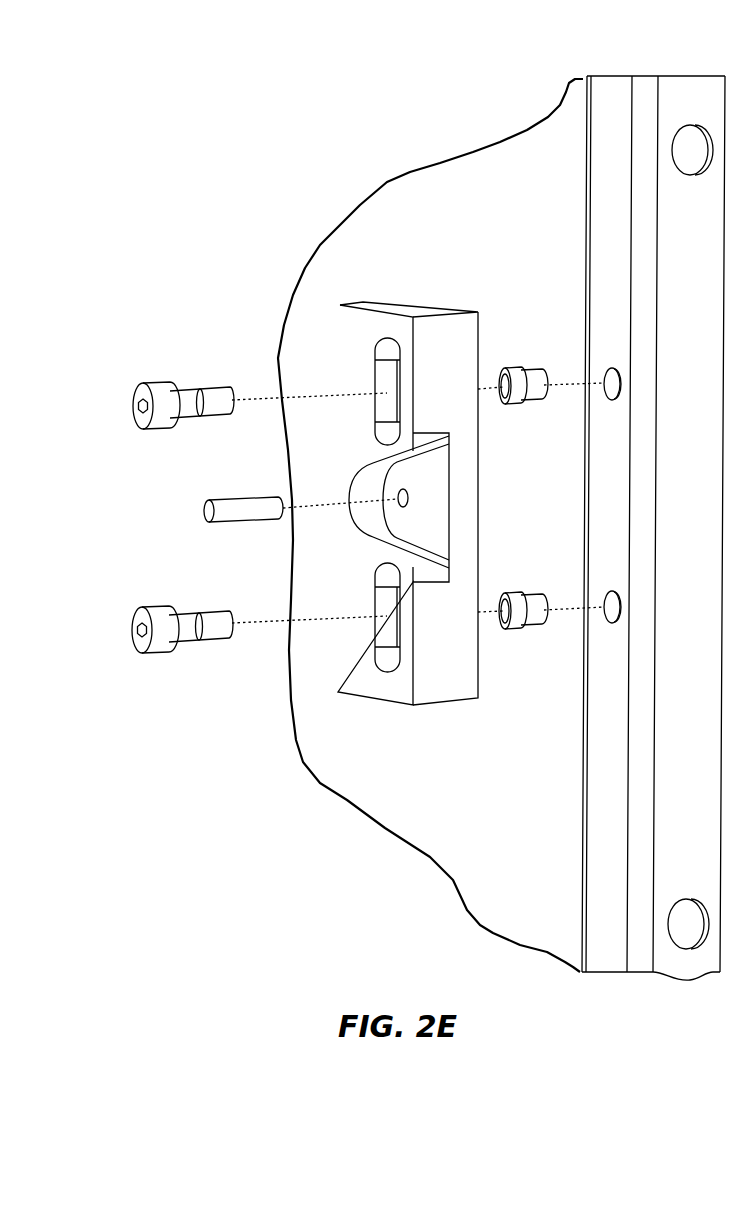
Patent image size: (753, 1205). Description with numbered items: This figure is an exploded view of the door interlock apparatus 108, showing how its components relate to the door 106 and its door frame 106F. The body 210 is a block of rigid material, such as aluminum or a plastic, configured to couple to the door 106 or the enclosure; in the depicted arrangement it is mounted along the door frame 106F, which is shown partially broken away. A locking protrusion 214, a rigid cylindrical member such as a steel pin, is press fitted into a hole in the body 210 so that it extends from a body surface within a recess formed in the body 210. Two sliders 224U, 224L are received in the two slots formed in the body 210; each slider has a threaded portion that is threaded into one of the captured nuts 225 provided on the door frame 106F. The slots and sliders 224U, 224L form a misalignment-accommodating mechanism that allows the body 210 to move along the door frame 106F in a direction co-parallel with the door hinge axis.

The door interlock apparatus 108 is at (178, 221).
The door 106 is at (591, 512).
The door frame 106F is at (613, 115).
The body 210 is at (357, 335).
The locking protrusion 214 is at (215, 500).
The upper slider 224U is at (183, 385).
The lower slider 224L is at (180, 652).
The captured nuts 225 is at (513, 367).